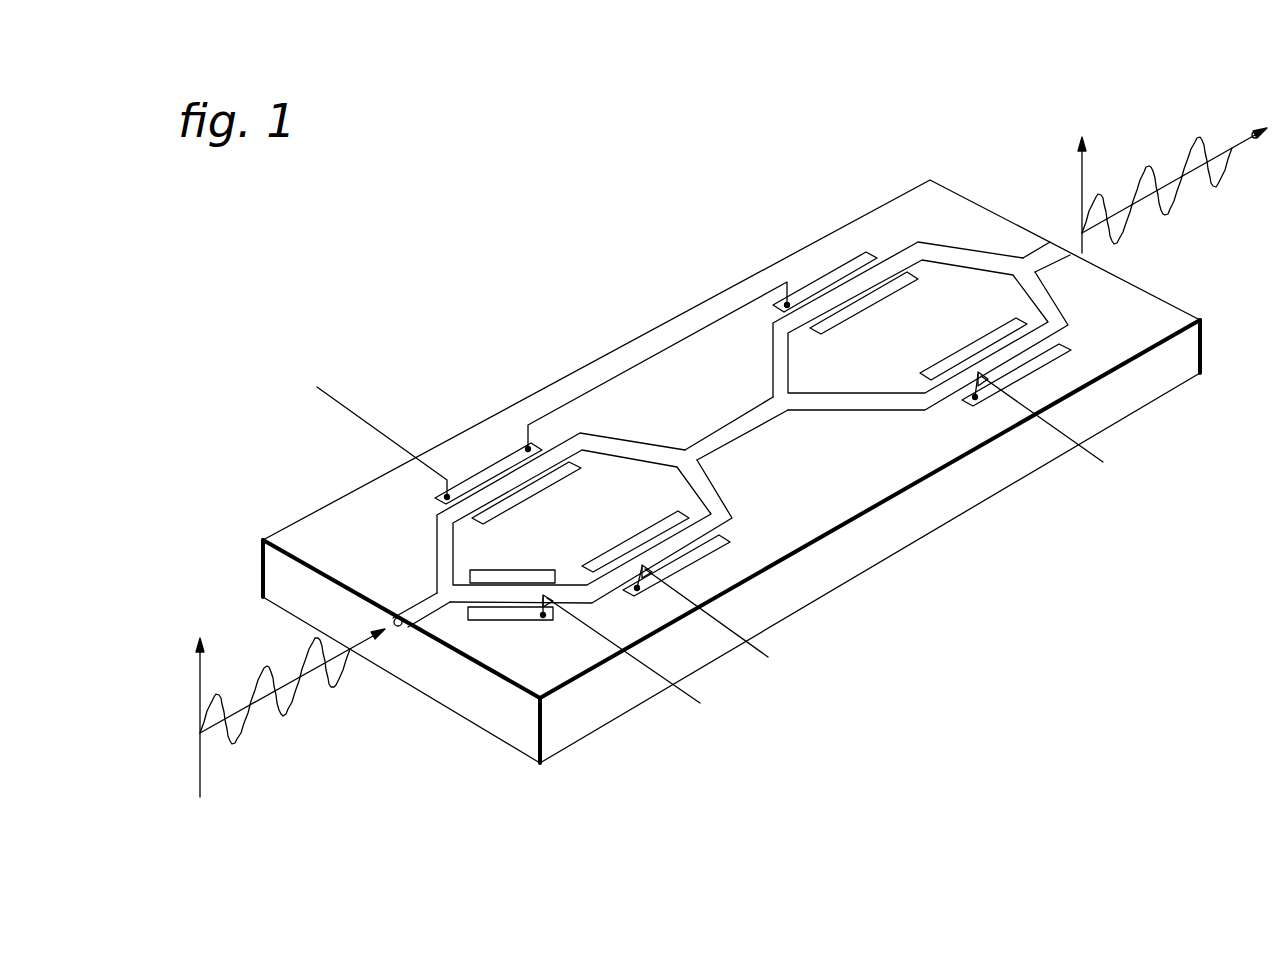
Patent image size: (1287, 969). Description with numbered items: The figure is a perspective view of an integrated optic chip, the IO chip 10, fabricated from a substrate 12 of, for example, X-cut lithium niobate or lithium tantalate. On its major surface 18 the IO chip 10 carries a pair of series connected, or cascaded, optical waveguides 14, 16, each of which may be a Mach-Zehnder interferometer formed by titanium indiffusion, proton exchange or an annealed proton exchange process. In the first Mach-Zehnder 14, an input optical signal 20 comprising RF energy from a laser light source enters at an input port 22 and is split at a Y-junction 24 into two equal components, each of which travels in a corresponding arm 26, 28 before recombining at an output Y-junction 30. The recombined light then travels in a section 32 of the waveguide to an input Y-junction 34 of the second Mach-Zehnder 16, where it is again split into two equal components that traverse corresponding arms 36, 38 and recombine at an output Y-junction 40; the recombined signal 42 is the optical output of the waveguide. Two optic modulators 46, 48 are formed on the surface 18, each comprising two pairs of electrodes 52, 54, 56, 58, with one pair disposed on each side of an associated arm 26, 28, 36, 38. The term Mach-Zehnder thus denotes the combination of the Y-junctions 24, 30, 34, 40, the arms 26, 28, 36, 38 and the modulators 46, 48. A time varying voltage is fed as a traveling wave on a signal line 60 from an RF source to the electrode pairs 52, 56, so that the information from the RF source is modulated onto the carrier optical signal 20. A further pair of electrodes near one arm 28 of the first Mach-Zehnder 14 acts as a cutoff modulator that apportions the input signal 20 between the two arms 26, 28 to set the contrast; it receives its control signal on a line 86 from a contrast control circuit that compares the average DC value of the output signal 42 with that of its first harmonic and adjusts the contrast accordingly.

The IO chip 10 is at (612, 318).
The substrate 12 is at (937, 510).
The first Mach-Zehnder waveguide 14 is at (385, 530).
The second Mach-Zehnder waveguide 16 is at (948, 230).
The major surface 18 is at (806, 527).
The input optical signal 20 is at (255, 648).
The input port 22 is at (378, 640).
The input Y-junction 24 is at (438, 595).
The first arm 26 is at (450, 557).
The second arm 28 is at (587, 594).
The output Y-junction 30 is at (690, 458).
The waveguide section 32 is at (742, 430).
The input Y-junction 34 is at (778, 400).
The first arm 36 is at (773, 337).
The second arm 38 is at (903, 408).
The output Y-junction 40 is at (1023, 270).
The recombined output signal 42 is at (1148, 140).
The first optic modulator 46 is at (624, 502).
The second optic modulator 48 is at (895, 364).
The electrode pair 52 is at (538, 487).
The electrode pair 54 is at (663, 572).
The electrode pair 56 is at (885, 295).
The electrode pair 58 is at (1018, 370).
The signal line 60 is at (612, 378).
The contrast signal line 86 is at (583, 624).